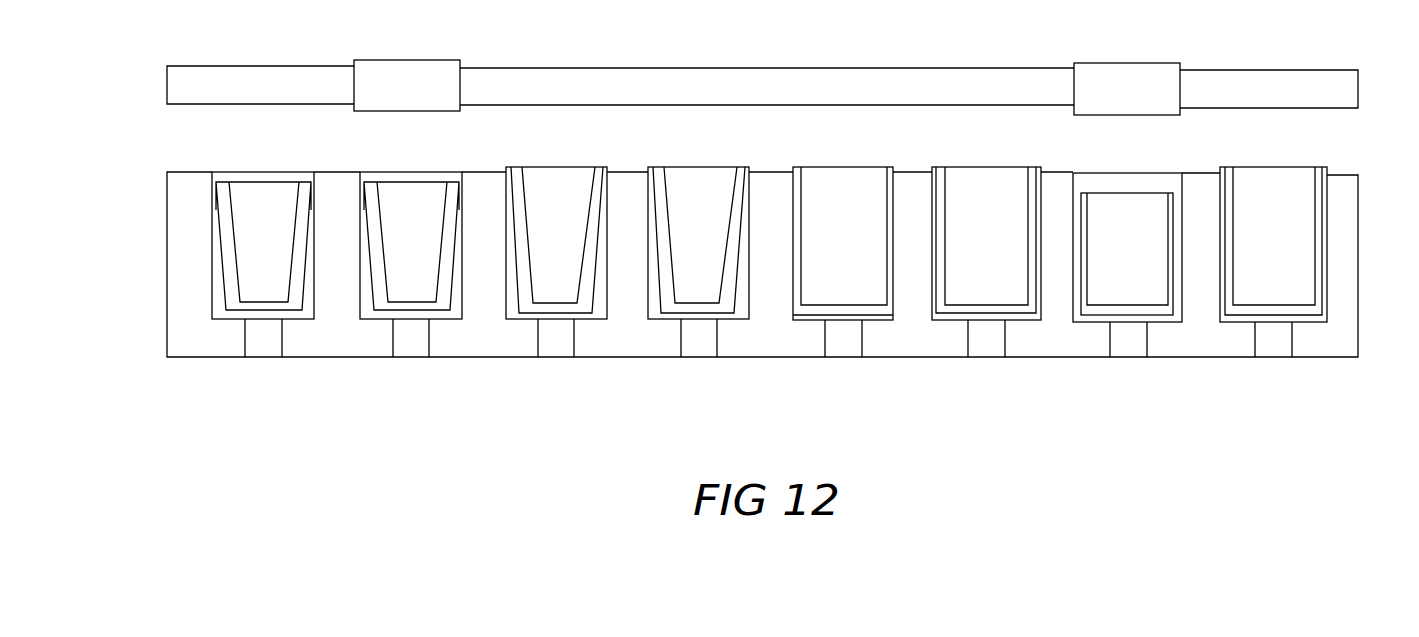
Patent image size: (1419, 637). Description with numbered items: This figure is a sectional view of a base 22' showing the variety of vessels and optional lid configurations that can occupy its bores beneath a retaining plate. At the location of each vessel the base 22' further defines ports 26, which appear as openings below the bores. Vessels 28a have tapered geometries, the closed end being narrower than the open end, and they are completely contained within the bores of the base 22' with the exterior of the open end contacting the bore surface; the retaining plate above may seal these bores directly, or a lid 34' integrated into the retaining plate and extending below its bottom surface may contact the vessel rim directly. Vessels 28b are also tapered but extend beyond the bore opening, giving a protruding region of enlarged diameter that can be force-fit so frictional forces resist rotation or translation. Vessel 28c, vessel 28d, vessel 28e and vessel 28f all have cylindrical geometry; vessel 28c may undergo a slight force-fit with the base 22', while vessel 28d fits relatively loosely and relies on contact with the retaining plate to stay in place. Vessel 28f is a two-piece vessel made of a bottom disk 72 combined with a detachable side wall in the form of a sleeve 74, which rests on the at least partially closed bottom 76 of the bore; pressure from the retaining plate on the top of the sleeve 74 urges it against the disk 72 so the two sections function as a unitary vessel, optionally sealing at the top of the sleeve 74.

The base 22' is at (727, 264).
The ports 26 is at (245, 333).
The vessels 28a is at (305, 190).
The vessels 28b is at (593, 178).
The vessel 28c is at (887, 182).
The vessel 28d is at (1007, 185).
The vessel 28e is at (1168, 212).
The vessel 28f is at (1314, 269).
The lid 34' is at (767, 65).
The bottom disk 72 is at (1313, 308).
The sleeve 74 is at (1313, 212).
The bottom of the bore 76 is at (1248, 322).